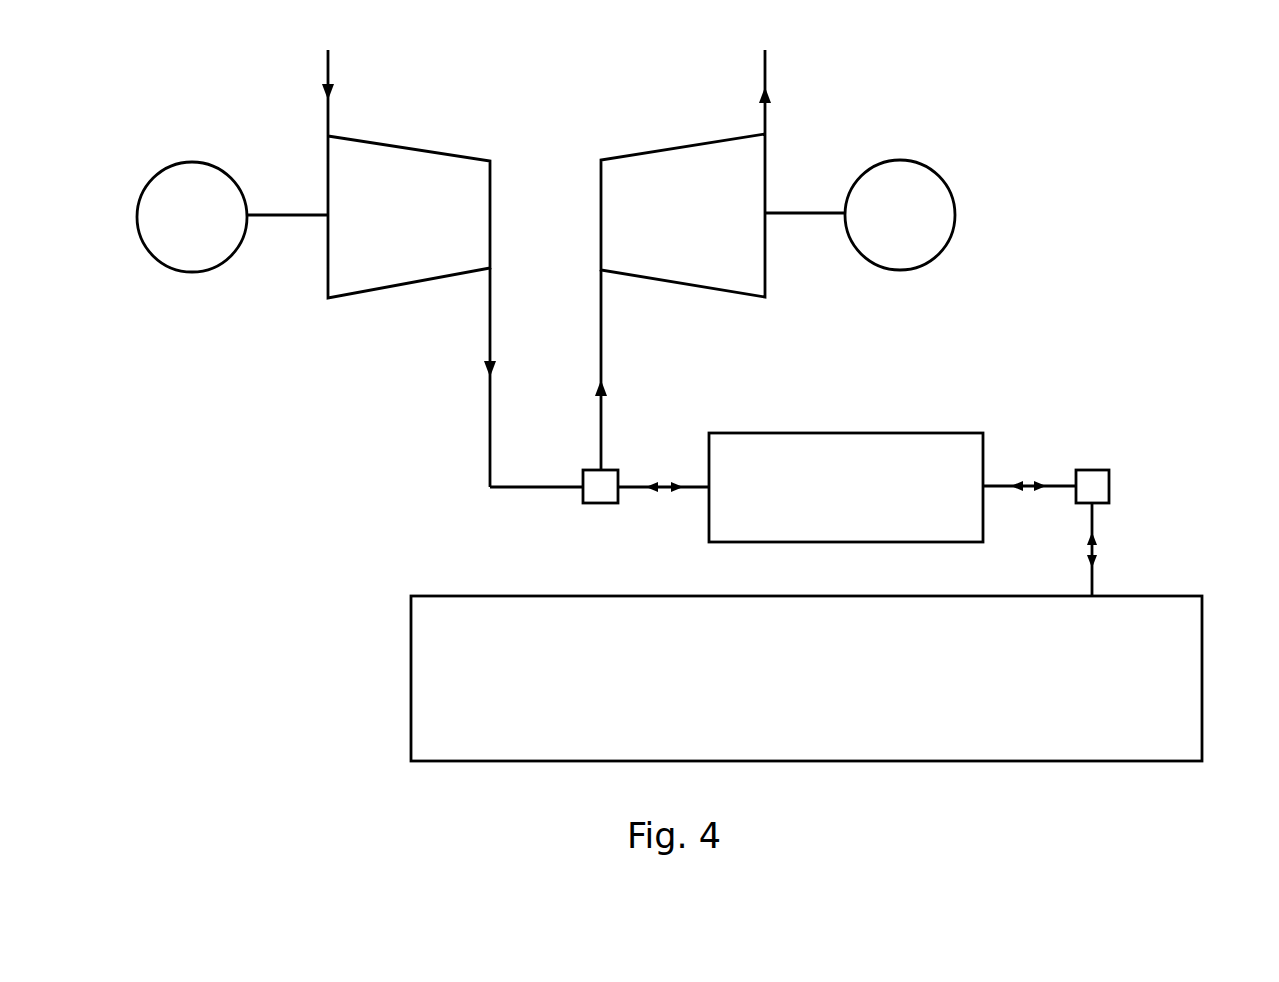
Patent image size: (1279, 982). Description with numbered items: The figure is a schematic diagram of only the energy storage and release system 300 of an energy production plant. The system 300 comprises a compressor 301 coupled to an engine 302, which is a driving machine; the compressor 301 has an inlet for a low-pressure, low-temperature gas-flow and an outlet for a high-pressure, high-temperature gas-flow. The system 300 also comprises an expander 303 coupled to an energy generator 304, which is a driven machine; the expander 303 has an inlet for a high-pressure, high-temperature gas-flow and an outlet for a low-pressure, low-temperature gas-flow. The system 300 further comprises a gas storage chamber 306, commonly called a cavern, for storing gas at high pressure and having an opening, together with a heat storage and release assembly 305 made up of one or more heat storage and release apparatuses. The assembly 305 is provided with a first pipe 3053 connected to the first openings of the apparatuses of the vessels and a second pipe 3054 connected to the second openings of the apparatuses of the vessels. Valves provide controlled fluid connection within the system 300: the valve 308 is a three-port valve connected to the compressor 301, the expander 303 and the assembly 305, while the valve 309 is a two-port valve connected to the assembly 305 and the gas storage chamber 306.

The energy storage and release system 300 is at (1064, 258).
The compressor 301 is at (395, 170).
The engine 302 is at (178, 182).
The expander 303 is at (698, 170).
The energy generator 304 is at (889, 180).
The heat storage and release assembly 305 is at (839, 453).
The gas storage chamber 306 is at (1137, 615).
The three-port valve 308 is at (608, 478).
The two-port valve 309 is at (1098, 478).
The first pipe 3053 is at (663, 506).
The second pipe 3054 is at (1029, 505).